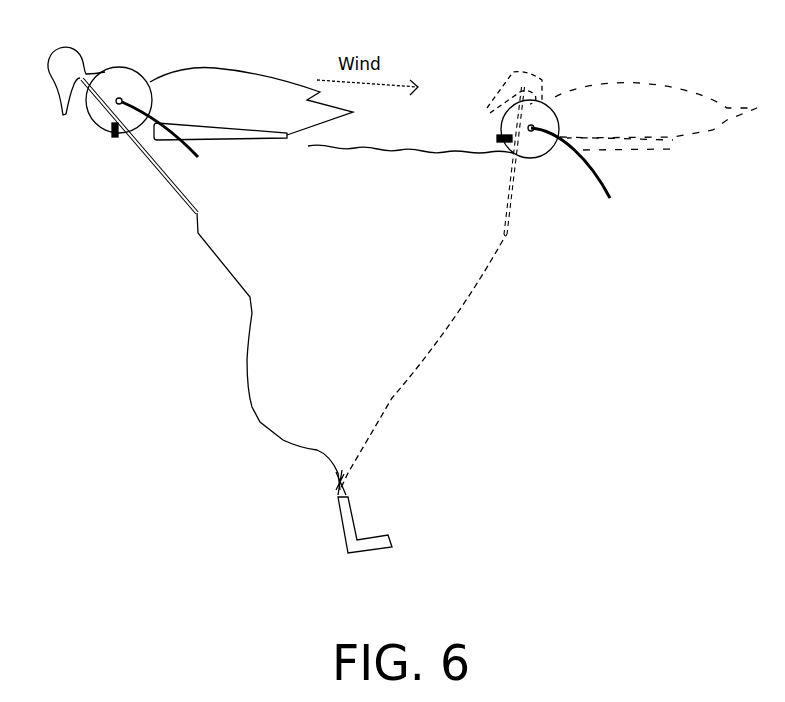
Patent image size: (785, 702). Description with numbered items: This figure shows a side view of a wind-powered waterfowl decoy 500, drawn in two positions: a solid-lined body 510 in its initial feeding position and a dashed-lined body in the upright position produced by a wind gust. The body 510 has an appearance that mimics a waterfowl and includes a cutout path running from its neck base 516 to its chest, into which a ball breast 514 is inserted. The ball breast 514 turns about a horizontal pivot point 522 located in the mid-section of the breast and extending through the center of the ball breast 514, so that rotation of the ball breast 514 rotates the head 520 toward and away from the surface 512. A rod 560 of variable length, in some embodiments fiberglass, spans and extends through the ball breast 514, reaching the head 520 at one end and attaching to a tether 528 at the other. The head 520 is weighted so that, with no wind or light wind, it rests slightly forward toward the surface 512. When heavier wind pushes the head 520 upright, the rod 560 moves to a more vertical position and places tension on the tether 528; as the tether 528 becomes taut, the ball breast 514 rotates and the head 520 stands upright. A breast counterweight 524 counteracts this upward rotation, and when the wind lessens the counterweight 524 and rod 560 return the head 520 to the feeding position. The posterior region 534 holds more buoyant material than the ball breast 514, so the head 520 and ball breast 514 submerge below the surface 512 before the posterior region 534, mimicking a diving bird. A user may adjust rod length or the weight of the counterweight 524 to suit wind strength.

The waterfowl decoy 500 is at (280, 232).
The body 510 is at (242, 110).
The surface 512 is at (430, 148).
The ball breast 514 is at (102, 122).
The neck base 516 is at (103, 70).
The head 520 is at (67, 53).
The horizontal pivot point 522 is at (384, 170).
The breast counterweight 524 is at (112, 138).
The tether 528 is at (243, 382).
The posterior region 534 is at (293, 109).
The rod 560 is at (152, 168).